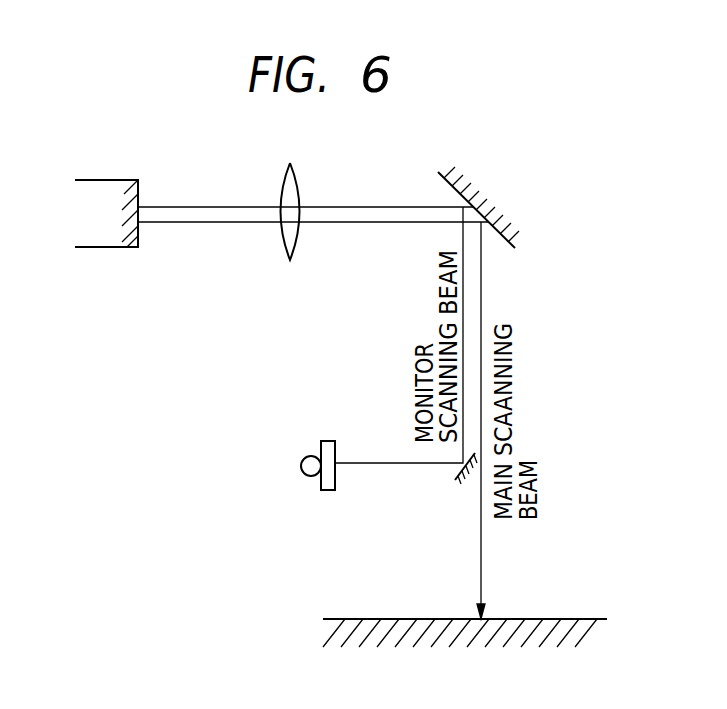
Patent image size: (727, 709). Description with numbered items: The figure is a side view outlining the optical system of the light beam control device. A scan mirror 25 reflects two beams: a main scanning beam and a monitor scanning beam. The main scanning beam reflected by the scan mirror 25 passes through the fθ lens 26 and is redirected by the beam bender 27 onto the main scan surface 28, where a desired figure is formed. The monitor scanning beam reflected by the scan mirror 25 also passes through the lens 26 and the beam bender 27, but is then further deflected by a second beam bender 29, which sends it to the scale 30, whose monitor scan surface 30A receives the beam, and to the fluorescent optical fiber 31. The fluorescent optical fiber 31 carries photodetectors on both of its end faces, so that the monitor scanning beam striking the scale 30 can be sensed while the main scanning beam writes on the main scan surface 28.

The scan mirror 25 is at (88, 188).
The fθ lens 26 is at (283, 188).
The beam bender 27 is at (436, 188).
The main scan surface 28 is at (567, 619).
The beam bender 29 is at (451, 468).
The scale 30 is at (321, 485).
The monitor scan surface 30A is at (337, 478).
The fluorescent optical fiber 31 is at (306, 458).